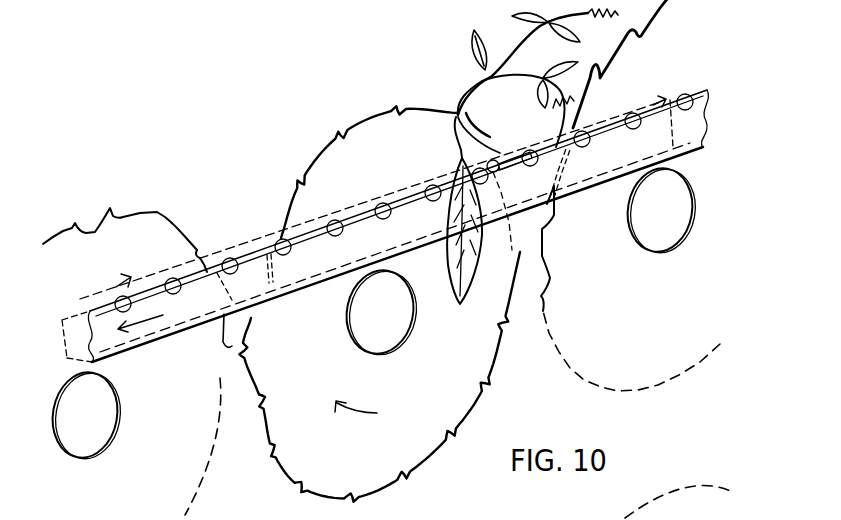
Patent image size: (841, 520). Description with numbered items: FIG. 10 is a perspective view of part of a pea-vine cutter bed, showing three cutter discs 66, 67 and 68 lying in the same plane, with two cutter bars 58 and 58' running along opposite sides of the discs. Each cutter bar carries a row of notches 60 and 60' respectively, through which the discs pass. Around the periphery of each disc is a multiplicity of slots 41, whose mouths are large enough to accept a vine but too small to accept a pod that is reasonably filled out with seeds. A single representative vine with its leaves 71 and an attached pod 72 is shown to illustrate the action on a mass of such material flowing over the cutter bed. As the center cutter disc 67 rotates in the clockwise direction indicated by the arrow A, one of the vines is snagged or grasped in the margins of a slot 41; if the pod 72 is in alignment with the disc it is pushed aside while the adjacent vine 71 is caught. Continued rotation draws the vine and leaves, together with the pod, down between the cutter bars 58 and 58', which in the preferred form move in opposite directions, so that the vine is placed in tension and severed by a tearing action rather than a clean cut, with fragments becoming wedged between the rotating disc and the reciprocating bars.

The slots 41 is at (167, 219).
The cutter bar 58 is at (385, 226).
The cutter bar 58' is at (395, 247).
The notches 60 is at (378, 212).
The notches 60' is at (696, 82).
The cutter disc 66 is at (94, 247).
The cutter disc 67 is at (355, 158).
The cutter disc 68 is at (630, 195).
The vine and leaves 71 is at (466, 90).
The pod 72 is at (478, 265).